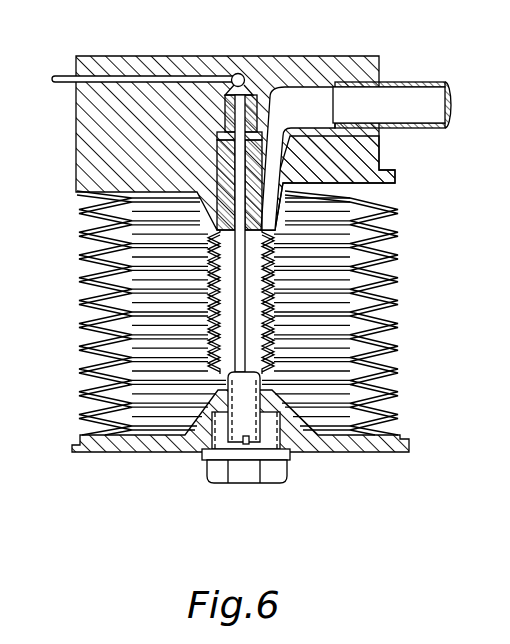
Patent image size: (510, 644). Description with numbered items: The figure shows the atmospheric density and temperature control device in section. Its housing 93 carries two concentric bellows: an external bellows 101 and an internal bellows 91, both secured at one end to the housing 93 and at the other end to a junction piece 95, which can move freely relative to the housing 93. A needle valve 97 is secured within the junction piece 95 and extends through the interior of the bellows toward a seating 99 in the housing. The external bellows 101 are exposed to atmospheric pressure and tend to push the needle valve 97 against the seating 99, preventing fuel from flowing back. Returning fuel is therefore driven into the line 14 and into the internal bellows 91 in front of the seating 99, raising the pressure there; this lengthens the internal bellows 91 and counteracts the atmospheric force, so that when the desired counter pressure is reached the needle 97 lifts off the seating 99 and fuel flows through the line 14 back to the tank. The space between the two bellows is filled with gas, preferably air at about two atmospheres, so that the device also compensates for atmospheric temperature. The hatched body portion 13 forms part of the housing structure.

The nozzle body 13 is at (362, 167).
The line 14 is at (62, 74).
The internal bellows 91 is at (272, 268).
The housing 93 is at (356, 56).
The junction piece 95 is at (300, 443).
The needle valve 97 is at (272, 313).
The seating 99 is at (216, 132).
The external bellows 101 is at (106, 326).